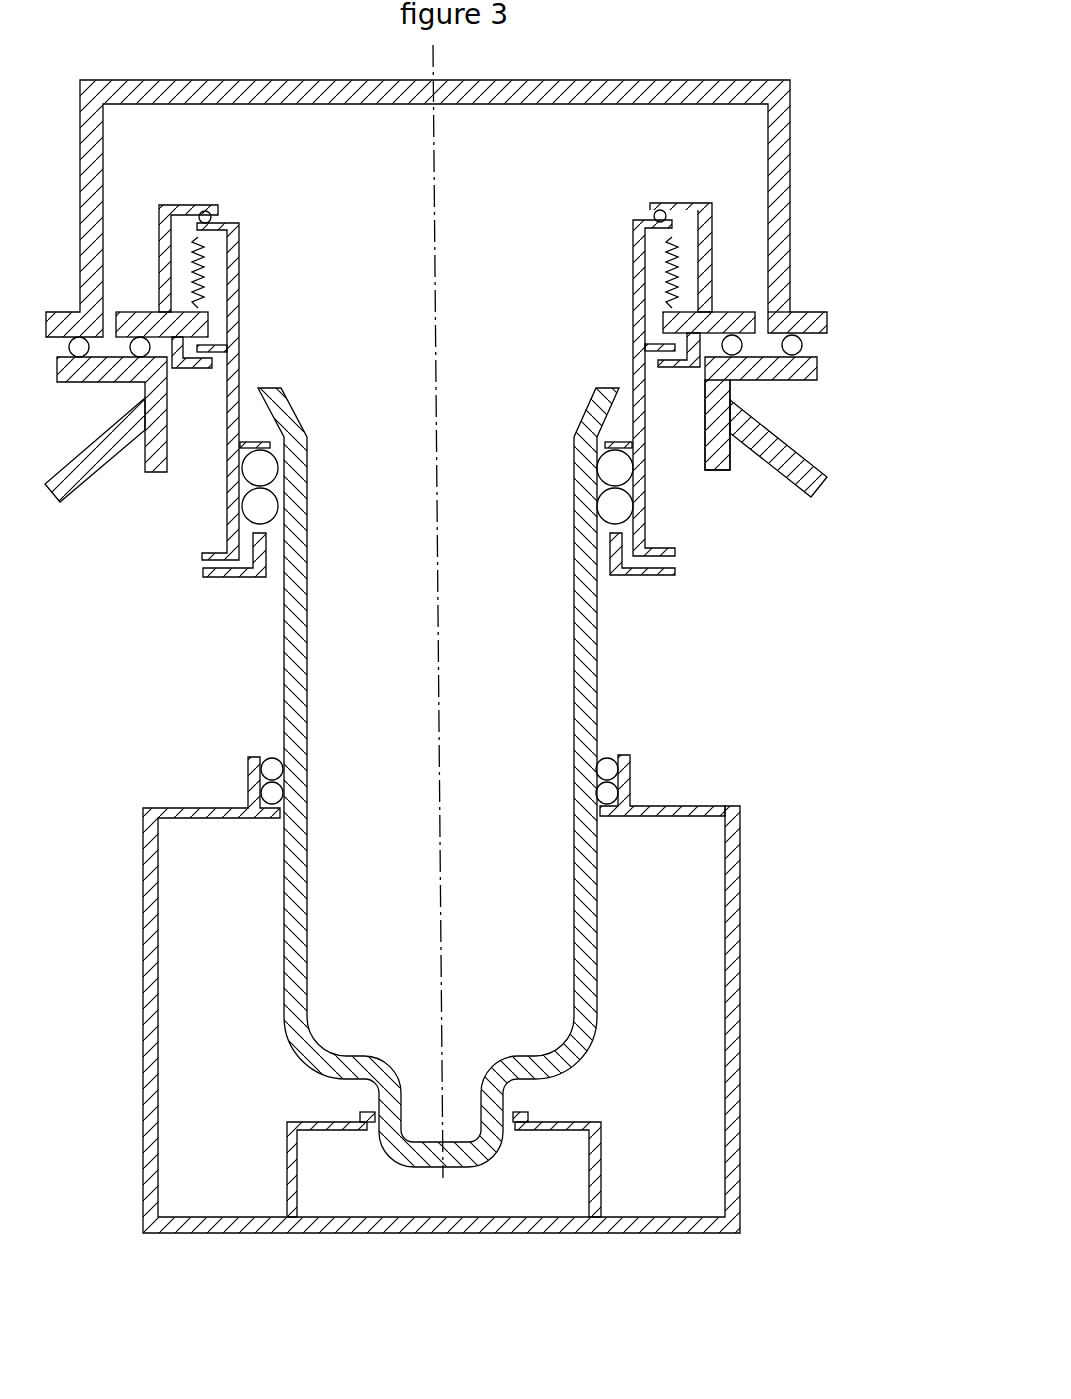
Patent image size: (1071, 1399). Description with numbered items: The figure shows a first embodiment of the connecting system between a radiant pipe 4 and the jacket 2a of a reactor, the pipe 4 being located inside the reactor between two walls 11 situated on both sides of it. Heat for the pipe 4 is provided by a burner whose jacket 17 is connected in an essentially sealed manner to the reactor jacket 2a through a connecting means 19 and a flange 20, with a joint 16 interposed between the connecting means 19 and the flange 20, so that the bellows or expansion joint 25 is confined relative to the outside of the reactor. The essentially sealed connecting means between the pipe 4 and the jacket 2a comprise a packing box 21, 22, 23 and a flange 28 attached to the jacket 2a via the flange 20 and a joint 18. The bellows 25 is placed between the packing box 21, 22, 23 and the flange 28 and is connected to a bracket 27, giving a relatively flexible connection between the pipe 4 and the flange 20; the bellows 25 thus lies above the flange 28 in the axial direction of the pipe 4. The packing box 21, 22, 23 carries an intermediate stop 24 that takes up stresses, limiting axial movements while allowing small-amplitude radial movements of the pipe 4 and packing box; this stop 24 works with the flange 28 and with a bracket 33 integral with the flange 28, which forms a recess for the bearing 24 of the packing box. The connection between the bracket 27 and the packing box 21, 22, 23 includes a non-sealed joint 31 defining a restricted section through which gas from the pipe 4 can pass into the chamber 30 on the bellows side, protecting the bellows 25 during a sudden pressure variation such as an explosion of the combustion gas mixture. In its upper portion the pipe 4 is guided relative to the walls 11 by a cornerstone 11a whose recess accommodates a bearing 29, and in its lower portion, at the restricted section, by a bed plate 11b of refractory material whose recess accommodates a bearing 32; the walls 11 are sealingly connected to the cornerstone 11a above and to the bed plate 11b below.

The jacket of the reactor 2a is at (787, 433).
The pipe 4 is at (597, 686).
The walls 11 is at (741, 1010).
The cornerstone 11a is at (636, 780).
The bed plate 11b is at (644, 1213).
The joint 16 is at (805, 343).
The jacket 17 is at (790, 205).
The joint 18 is at (737, 347).
The connecting means 19 is at (822, 315).
The flange 20 is at (820, 372).
The packing box 21 is at (632, 378).
The packing box 22 is at (607, 468).
The packing box 23 is at (700, 609).
The intermediate stop 24 is at (648, 347).
The bellows 25 is at (666, 276).
The bracket 27 is at (674, 201).
The flange 28 is at (727, 310).
The bearing 29 is at (598, 788).
The chamber 30 is at (693, 252).
The non-sealed joint 31 is at (655, 216).
The bearing 32 is at (510, 1113).
The bracket 33 is at (684, 371).